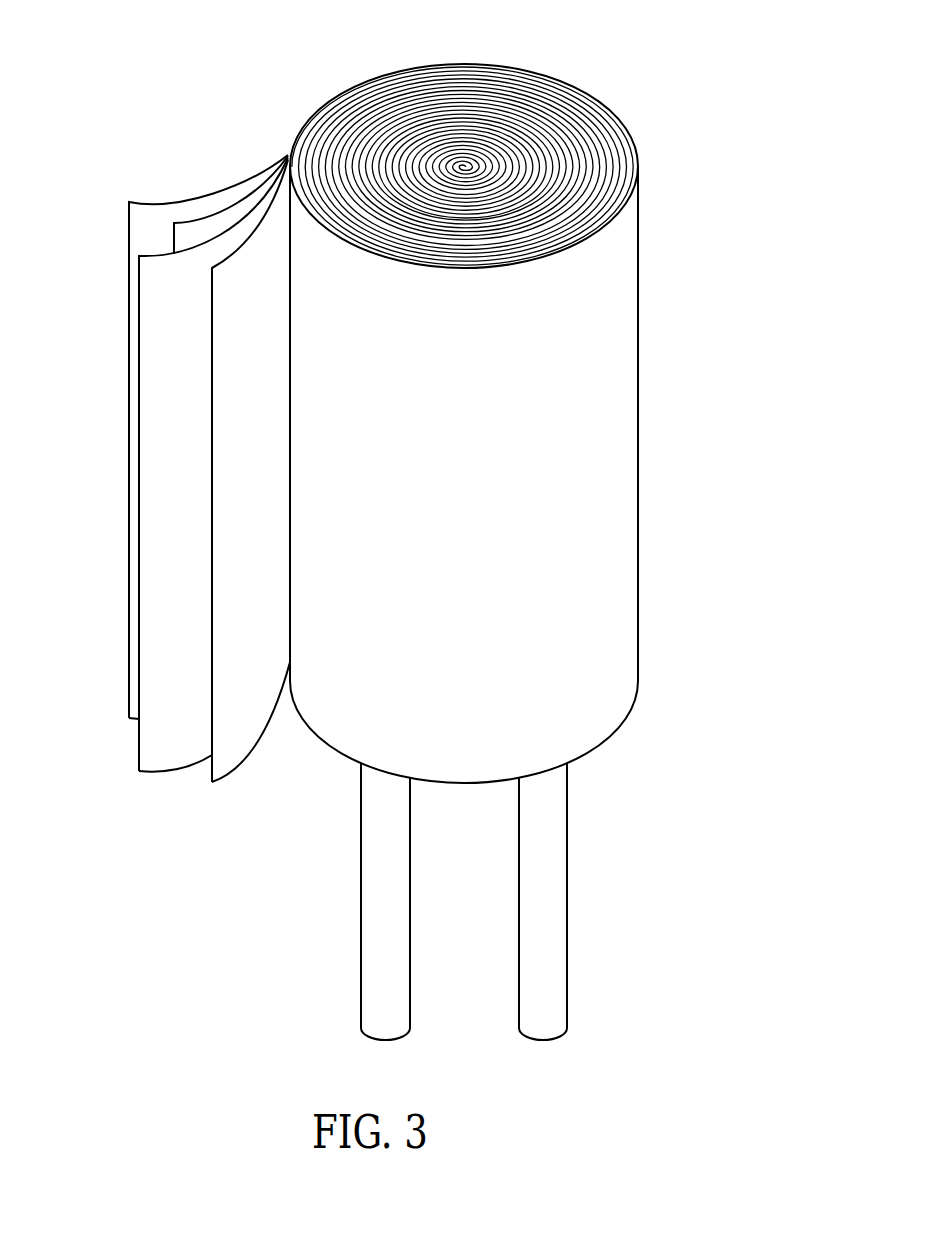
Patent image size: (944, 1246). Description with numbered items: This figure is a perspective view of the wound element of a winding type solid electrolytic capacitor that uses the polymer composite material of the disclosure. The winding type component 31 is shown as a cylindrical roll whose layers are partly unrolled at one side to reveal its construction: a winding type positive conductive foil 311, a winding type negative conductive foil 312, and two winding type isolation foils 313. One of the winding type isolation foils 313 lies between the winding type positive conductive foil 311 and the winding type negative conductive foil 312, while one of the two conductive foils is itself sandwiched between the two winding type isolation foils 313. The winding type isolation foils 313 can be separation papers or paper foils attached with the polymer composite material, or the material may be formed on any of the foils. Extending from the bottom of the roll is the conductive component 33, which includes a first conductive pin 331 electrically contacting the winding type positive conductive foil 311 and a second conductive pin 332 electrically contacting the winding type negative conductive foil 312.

The winding type component 31 is at (368, 88).
The winding type positive conductive foil 311 is at (203, 232).
The winding type negative conductive foil 312 is at (255, 253).
The winding type isolation foils 313 is at (150, 233).
The conductive component 33 is at (388, 901).
The first conductive pin 331 is at (388, 870).
The second conductive pin 332 is at (540, 930).